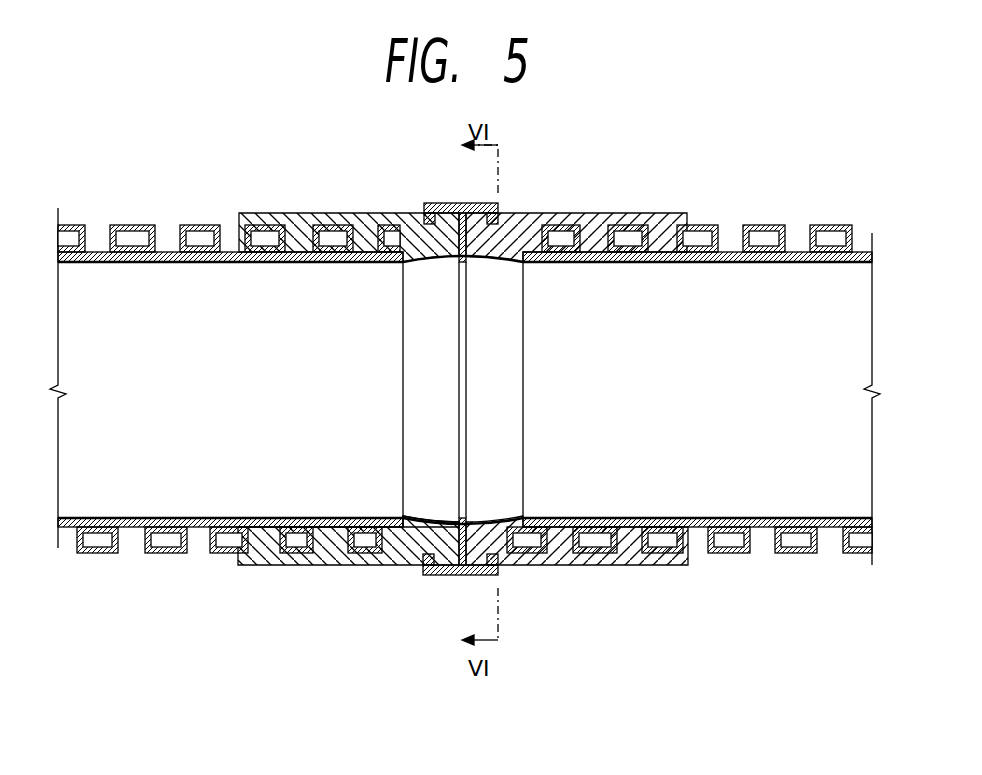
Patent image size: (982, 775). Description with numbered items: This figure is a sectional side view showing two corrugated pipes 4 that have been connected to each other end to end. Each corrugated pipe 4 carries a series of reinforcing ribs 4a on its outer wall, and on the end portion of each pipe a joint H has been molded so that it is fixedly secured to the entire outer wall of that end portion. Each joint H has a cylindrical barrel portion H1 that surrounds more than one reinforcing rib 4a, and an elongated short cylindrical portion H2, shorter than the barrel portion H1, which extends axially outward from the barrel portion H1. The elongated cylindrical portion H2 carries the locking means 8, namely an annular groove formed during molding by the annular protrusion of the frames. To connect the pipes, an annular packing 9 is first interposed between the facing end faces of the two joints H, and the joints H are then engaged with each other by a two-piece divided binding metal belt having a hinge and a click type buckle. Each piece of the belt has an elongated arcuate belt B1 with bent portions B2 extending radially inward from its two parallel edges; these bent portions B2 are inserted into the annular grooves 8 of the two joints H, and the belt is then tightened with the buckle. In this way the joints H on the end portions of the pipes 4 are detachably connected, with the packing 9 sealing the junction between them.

The corrugated pipe 4 is at (465, 391).
The reinforcing rib 4a is at (162, 553).
The locking means (annular groove) 8 is at (496, 216).
The annular packing 9 is at (456, 240).
The joint H is at (463, 339).
The cylindrical barrel portion H1 is at (660, 226).
The elongated short cylindrical portion H2 is at (545, 216).
The elongated arcuate belt B1 is at (458, 574).
The bent portion B2 is at (412, 232).